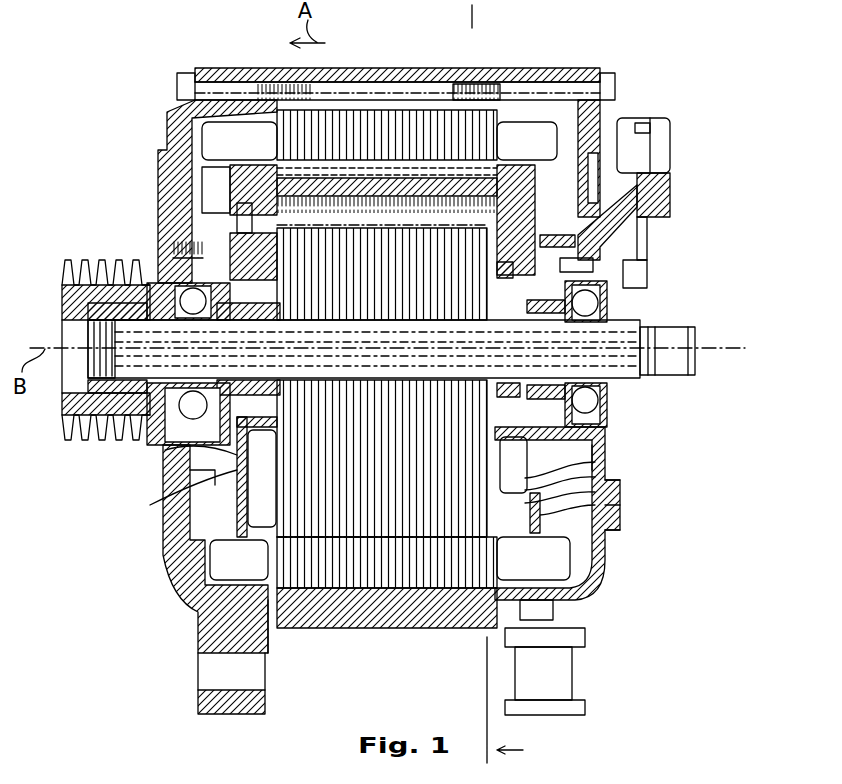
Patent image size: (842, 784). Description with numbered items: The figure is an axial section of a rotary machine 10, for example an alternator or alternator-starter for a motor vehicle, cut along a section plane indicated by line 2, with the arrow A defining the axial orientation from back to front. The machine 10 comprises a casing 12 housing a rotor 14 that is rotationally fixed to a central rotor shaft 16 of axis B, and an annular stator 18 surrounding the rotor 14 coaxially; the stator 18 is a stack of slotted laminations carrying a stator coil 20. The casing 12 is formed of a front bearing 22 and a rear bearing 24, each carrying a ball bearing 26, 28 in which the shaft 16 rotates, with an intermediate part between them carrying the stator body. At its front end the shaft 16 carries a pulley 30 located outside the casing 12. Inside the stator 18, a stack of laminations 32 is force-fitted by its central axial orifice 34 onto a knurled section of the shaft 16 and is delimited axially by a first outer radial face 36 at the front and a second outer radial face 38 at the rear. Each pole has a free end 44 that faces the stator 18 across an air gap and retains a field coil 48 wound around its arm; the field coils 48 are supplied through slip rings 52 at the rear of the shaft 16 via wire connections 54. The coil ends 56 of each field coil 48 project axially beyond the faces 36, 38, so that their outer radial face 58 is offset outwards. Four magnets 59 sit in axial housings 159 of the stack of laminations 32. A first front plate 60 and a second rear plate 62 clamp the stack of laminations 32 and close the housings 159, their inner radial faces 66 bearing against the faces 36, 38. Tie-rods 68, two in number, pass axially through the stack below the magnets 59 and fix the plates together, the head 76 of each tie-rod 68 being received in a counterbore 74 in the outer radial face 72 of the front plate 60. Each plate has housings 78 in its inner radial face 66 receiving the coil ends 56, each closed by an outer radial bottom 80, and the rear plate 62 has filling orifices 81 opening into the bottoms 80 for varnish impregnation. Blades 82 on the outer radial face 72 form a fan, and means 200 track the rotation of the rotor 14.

The section view direction 2 is at (519, 702).
The rotary machine 10 is at (64, 126).
The casing 12 is at (165, 110).
The rotor 14 is at (237, 414).
The central rotor shaft 16 is at (120, 257).
The annular stator 18 is at (417, 120).
The stator coil 20 is at (238, 140).
The front bearing 22 is at (165, 172).
The rear bearing 24 is at (563, 100).
The ball bearing 26 is at (185, 448).
The ball bearing 28 is at (613, 397).
The pulley 30 is at (62, 270).
The stack of laminations 32 is at (393, 497).
The central axial orifice 34 is at (330, 362).
The first outer radial face 36 is at (88, 327).
The second outer radial face 38 is at (660, 340).
The free end 44 is at (356, 533).
The field coil 48 is at (183, 553).
The slip rings 52 is at (651, 322).
The wire connections 54 is at (618, 258).
The coil ends 56 is at (278, 600).
The outer radial face 58 is at (622, 478).
The magnets 59 is at (470, 195).
The first front plate 60 is at (235, 248).
The second rear plate 62 is at (570, 167).
The inner radial faces 66 is at (478, 527).
The tie-rods 68 is at (380, 213).
The outer radial face 72 is at (595, 470).
The counterbores 74 is at (210, 163).
The head 76 is at (230, 220).
The housings 78 is at (595, 548).
The outer radial bottom 80 is at (258, 480).
The filling orifices 81 is at (622, 527).
The blades 82 is at (258, 488).
The axial housings 159 is at (473, 213).
The means for tracking the rotation of the rotor 200 is at (666, 237).